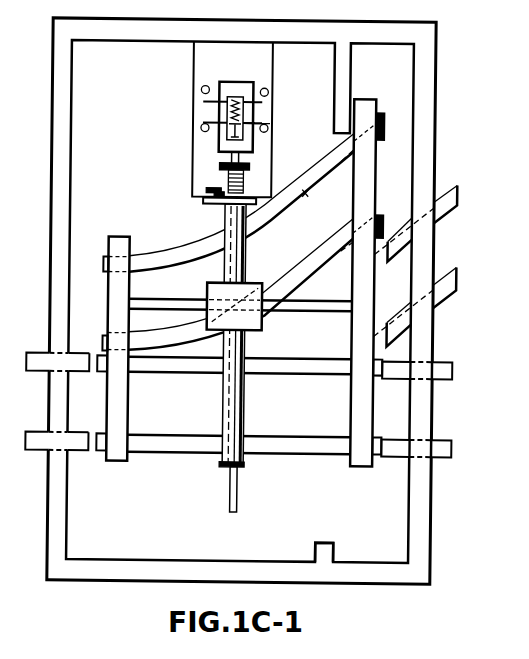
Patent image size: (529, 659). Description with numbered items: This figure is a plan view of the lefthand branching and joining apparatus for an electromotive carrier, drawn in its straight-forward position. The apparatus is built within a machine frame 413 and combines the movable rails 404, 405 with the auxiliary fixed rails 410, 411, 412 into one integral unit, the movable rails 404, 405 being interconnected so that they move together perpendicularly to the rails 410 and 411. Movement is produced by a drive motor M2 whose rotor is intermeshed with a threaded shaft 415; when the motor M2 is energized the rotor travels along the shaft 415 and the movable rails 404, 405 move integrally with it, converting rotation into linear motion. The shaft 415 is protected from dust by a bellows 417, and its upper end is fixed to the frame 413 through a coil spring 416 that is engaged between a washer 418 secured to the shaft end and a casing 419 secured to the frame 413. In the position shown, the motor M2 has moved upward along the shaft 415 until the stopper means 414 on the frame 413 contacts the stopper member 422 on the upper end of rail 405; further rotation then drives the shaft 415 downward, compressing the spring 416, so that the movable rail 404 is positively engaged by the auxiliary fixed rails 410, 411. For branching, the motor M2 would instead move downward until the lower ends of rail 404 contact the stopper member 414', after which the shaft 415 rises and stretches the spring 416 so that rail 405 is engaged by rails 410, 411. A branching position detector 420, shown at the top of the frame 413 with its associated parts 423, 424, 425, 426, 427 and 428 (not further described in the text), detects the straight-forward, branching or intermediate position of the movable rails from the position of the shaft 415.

The machine frame 413 is at (426, 35).
The stopper means 414 is at (375, 264).
The stopper member 414' is at (354, 541).
The auxiliary fixed rail 412 is at (440, 204).
The auxiliary fixed rail 410 is at (34, 437).
The auxiliary fixed rail 411 is at (438, 443).
The movable rail 404 is at (185, 437).
The movable rail 405 is at (320, 255).
The stopper member 422 is at (306, 188).
The threaded shaft 415 is at (231, 494).
The bellows 417 is at (238, 467).
The coil spring 416 is at (243, 178).
The washer 418 is at (205, 191).
The casing 419 is at (197, 162).
The branching position detector 420 is at (250, 82).
The spring assembly 423 is at (250, 148).
The lower contact 424 is at (200, 123).
The upper contact 425 is at (200, 102).
The contact lead 426 is at (268, 123).
The lower terminals 427 is at (200, 130).
The upper terminals 428 is at (203, 86).
The drive motor M2 is at (253, 290).